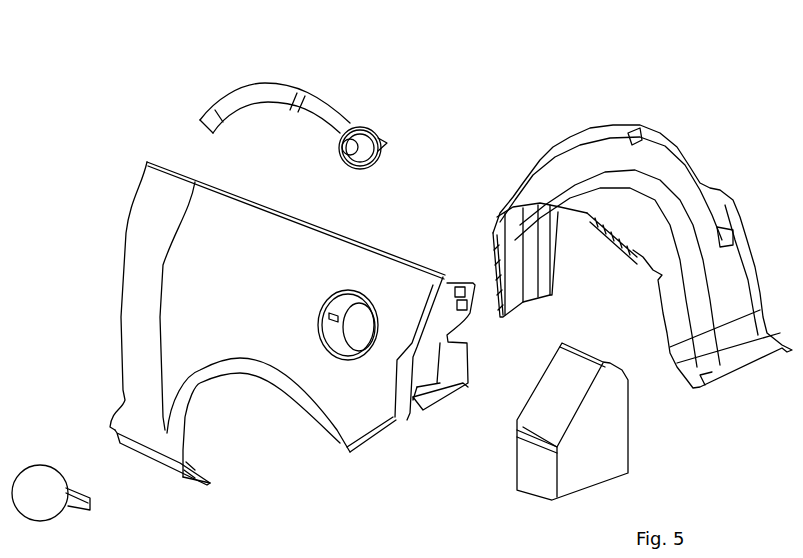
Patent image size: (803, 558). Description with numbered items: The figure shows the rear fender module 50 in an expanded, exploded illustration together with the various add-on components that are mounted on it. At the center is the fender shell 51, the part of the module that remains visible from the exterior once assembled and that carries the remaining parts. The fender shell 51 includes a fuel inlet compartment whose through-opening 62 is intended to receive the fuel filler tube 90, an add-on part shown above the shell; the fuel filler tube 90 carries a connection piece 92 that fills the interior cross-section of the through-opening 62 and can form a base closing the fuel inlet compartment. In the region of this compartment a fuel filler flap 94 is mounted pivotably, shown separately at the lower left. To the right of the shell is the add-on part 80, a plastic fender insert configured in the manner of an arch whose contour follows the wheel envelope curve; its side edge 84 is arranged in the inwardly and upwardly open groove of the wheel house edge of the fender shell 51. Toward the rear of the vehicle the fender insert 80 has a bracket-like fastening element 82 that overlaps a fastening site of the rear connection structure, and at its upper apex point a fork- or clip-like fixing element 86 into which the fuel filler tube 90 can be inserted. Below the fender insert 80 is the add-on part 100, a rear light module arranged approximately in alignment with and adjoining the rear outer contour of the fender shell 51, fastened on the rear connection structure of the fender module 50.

The rear fender module 50 is at (450, 133).
The fender shell 51 is at (230, 230).
The through-opening 62 is at (362, 315).
The add-on part (fender insert) 80 is at (599, 143).
The bracket-like fastening element 82 is at (727, 227).
The side edge 84 is at (587, 214).
The fork- or clip-like fixing element 86 is at (652, 127).
The fuel filler tube 90 is at (323, 117).
The connection piece 92 is at (363, 133).
The fuel filler flap 94 is at (40, 477).
The rear light module 100 is at (595, 463).